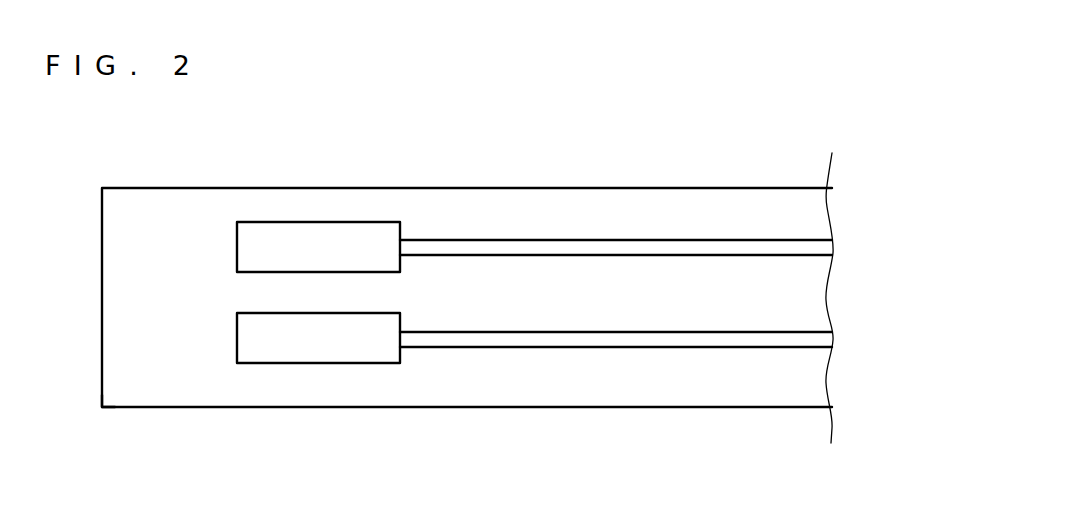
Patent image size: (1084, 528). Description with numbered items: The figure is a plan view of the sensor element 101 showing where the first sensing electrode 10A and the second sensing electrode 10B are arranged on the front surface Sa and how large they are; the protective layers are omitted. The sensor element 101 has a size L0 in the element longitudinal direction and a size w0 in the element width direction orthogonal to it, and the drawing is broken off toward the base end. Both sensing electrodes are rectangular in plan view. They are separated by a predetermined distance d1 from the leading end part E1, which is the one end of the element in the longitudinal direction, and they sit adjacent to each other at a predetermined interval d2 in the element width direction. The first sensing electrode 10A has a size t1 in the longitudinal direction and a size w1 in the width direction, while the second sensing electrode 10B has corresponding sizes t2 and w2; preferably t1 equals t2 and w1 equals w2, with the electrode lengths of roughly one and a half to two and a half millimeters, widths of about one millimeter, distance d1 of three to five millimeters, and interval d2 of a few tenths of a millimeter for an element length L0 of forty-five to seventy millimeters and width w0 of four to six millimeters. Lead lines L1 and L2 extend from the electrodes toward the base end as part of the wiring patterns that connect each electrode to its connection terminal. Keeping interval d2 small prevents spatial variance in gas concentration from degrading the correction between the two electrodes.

The sensor element 101 is at (612, 188).
The front surface Sa is at (141, 215).
The first sensing electrode 10A is at (401, 228).
The second sensing electrode 10B is at (399, 356).
The lead line L1 is at (633, 240).
The lead line L2 is at (633, 332).
The leading end part E1 is at (99, 402).
The size in element width direction w0 is at (71, 191).
The size of first sensing electrode in element width direction w1 is at (215, 223).
The size of second sensing electrode in element width direction w2 is at (215, 314).
The predetermined distance d1 is at (236, 376).
The predetermined interval d2 is at (315, 273).
The size of first sensing electrode in element longitudinal direction t1 is at (399, 215).
The size of second sensing electrode in element longitudinal direction t2 is at (399, 376).
The size in element longitudinal direction L0 is at (832, 457).